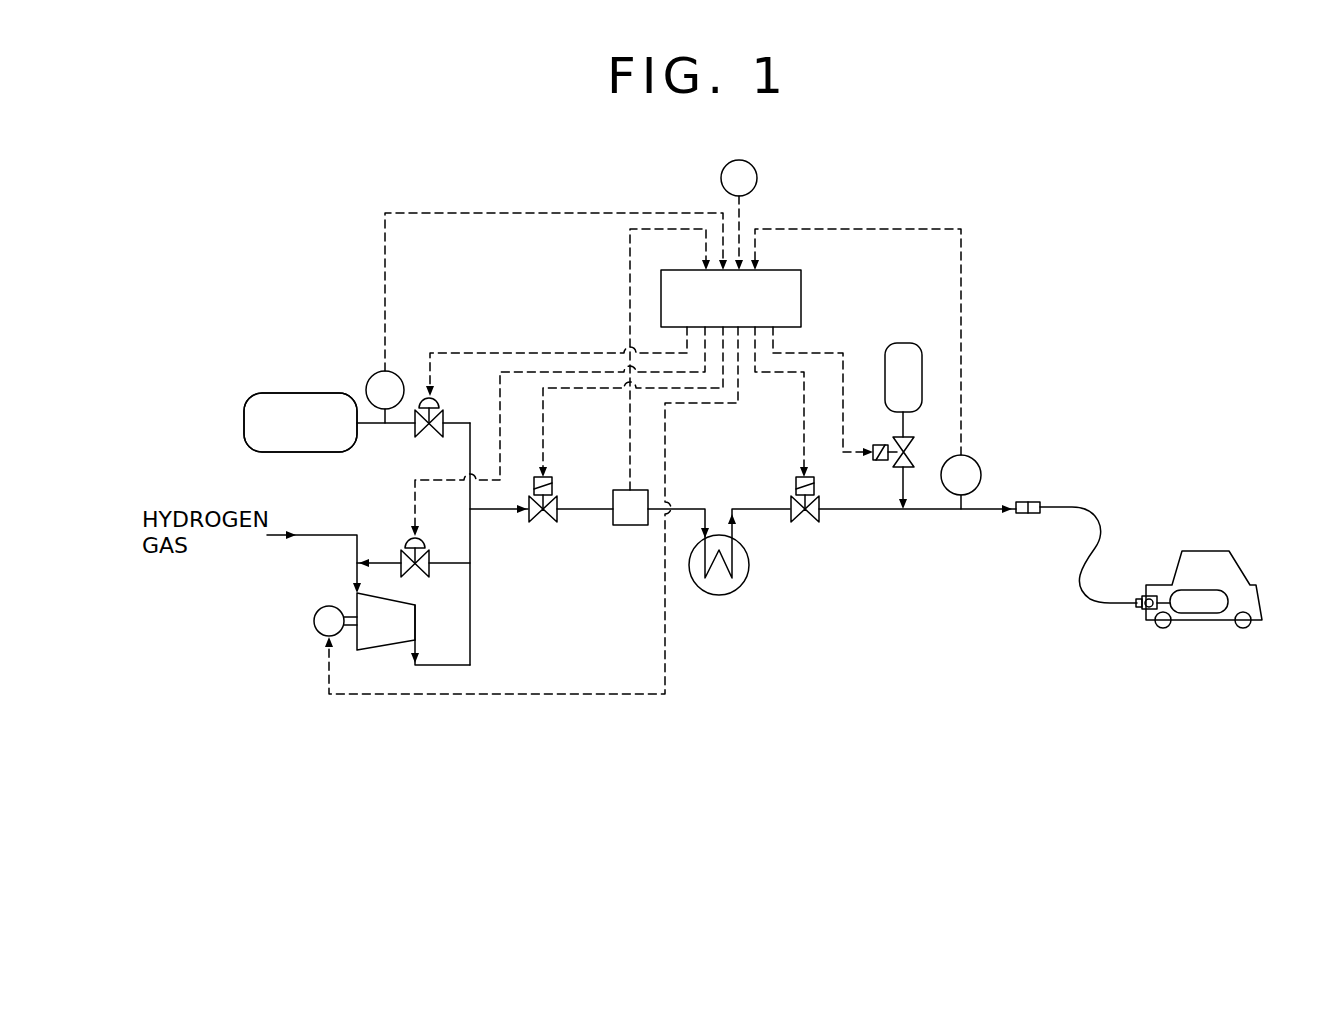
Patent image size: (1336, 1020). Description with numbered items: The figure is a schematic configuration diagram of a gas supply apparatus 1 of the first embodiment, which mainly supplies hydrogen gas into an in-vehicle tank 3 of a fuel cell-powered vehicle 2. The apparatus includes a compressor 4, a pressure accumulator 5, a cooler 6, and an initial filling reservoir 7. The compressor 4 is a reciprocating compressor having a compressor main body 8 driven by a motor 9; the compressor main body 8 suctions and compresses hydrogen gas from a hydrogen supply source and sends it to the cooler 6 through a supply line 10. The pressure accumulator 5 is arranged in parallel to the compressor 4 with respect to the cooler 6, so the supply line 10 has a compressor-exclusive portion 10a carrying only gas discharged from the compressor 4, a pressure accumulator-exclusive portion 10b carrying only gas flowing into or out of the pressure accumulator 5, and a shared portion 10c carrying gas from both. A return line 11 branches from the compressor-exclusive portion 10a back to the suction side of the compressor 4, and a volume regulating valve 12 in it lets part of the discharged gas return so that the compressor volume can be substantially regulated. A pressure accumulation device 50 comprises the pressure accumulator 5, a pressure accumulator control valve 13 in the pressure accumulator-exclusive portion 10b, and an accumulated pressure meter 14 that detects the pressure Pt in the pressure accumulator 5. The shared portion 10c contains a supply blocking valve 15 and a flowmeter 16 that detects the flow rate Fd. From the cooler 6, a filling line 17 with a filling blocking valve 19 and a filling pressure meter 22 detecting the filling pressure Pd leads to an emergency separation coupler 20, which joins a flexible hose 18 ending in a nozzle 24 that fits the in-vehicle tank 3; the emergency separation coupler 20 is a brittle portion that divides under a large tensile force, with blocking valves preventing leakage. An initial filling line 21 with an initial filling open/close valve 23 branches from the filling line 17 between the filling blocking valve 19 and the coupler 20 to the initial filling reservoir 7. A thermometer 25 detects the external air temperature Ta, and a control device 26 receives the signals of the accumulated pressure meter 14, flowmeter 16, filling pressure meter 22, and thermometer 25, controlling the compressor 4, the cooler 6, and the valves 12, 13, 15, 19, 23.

The gas supply apparatus 1 is at (1063, 232).
The fuel cell-powered vehicle 2 is at (1203, 550).
The in-vehicle tank 3 is at (1200, 605).
The compressor 4 is at (348, 600).
The pressure accumulator 5 is at (292, 393).
The cooler 6 is at (718, 595).
The initial filling reservoir 7 is at (898, 343).
The compressor main body 8 is at (405, 620).
The motor 9 is at (314, 623).
The supply line 10 is at (481, 629).
The compressor-exclusive portion 10a is at (470, 600).
The pressure accumulator-exclusive portion 10b is at (470, 460).
The shared portion 10c is at (500, 512).
The return line 11 is at (447, 560).
The volume regulating valve 12 is at (408, 540).
The pressure accumulator control valve 13 is at (442, 402).
The accumulated pressure meter 14 is at (372, 378).
The supply blocking valve 15 is at (553, 484).
The flowmeter 16 is at (630, 525).
The filling line 17 is at (866, 512).
The flexible hose 18 is at (1077, 578).
The filling blocking valve 19 is at (797, 486).
The emergency separation coupler 20 is at (1026, 502).
The initial filling line 21 is at (897, 480).
The filling pressure meter 22 is at (975, 446).
The initial filling open/close valve 23 is at (882, 444).
The nozzle 24 is at (1146, 612).
The thermometer 25 is at (758, 180).
The control device 26 is at (802, 298).
The pressure accumulation device 50 is at (243, 402).